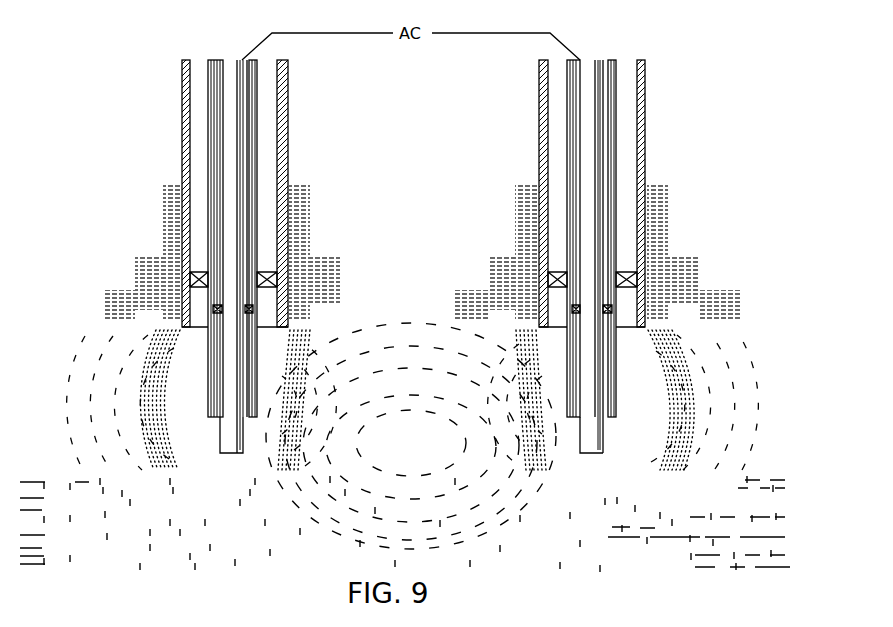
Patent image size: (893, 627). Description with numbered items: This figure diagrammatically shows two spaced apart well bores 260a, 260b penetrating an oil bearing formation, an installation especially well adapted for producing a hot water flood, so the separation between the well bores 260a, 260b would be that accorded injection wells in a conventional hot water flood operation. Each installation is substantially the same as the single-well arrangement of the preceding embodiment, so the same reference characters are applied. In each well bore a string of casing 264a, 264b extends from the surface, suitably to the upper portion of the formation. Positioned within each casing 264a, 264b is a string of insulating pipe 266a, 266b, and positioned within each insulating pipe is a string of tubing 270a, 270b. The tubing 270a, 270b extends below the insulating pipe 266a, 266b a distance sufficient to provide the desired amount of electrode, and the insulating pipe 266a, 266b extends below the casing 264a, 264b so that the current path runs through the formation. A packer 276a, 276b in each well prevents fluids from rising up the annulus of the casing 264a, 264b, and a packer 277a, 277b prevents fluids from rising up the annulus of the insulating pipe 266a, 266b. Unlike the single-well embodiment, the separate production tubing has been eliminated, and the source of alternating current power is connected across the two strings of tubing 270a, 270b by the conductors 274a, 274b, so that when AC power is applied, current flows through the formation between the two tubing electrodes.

The well bore 260a is at (283, 242).
The well bore 260b is at (642, 252).
The casing 264a is at (283, 170).
The casing 264b is at (641, 172).
The insulating pipe 266a is at (253, 130).
The insulating pipe 266b is at (612, 128).
The tubing 270a is at (242, 213).
The tubing 270b is at (595, 226).
The conductor 274a is at (288, 33).
The conductor 274b is at (553, 24).
The packer 276a is at (270, 280).
The packer 276b is at (632, 278).
The packer 277a is at (250, 310).
The packer 277b is at (610, 310).